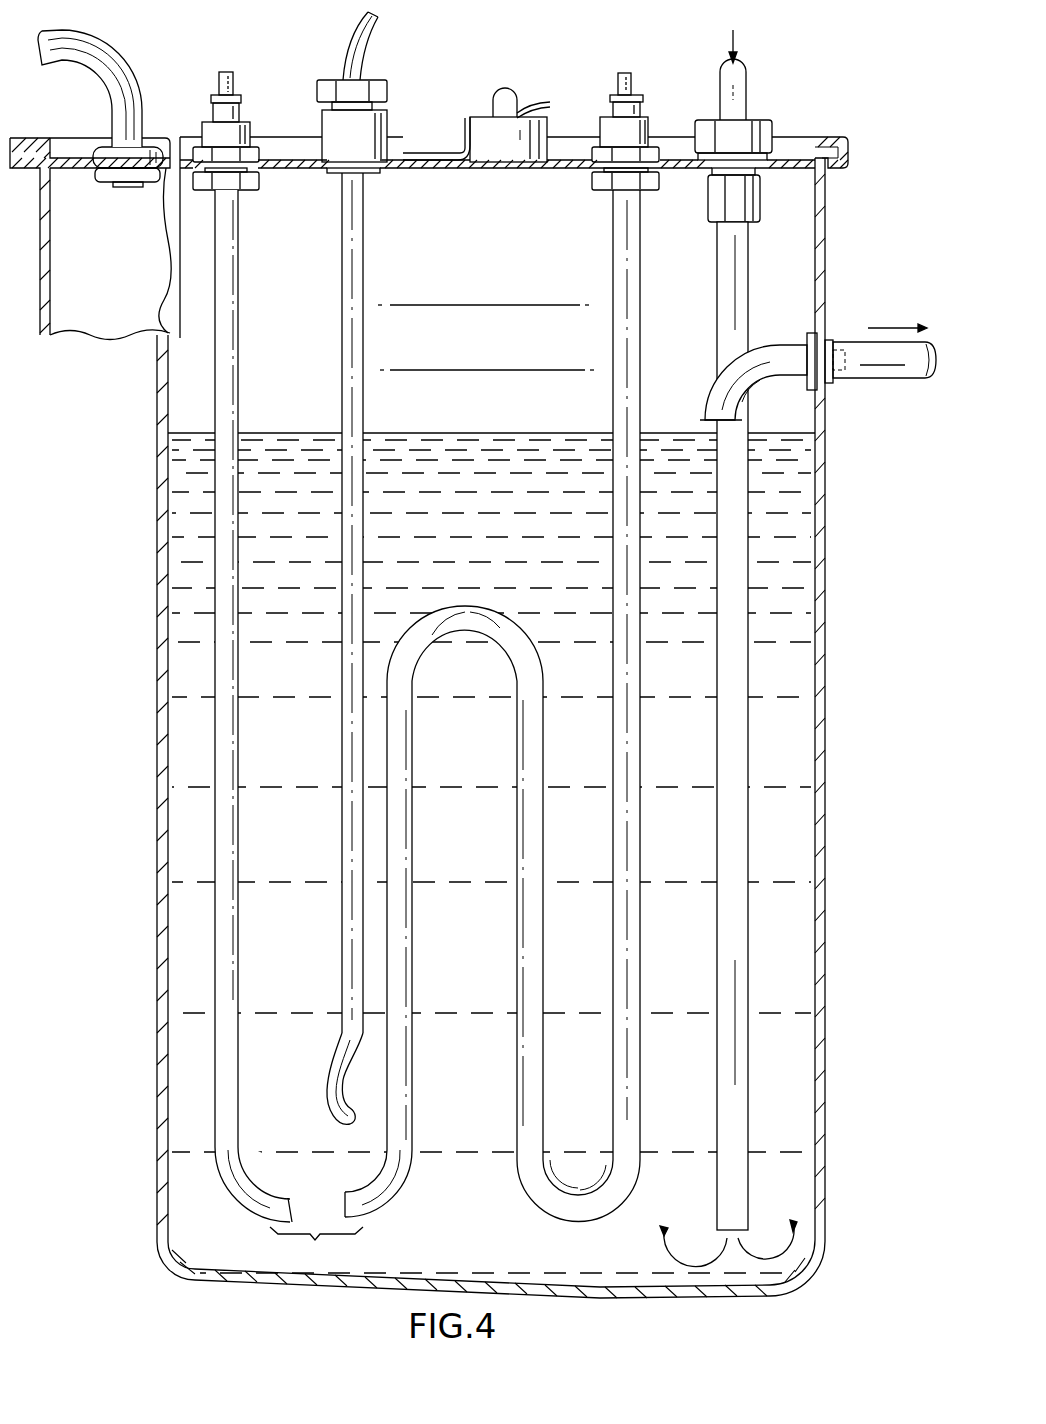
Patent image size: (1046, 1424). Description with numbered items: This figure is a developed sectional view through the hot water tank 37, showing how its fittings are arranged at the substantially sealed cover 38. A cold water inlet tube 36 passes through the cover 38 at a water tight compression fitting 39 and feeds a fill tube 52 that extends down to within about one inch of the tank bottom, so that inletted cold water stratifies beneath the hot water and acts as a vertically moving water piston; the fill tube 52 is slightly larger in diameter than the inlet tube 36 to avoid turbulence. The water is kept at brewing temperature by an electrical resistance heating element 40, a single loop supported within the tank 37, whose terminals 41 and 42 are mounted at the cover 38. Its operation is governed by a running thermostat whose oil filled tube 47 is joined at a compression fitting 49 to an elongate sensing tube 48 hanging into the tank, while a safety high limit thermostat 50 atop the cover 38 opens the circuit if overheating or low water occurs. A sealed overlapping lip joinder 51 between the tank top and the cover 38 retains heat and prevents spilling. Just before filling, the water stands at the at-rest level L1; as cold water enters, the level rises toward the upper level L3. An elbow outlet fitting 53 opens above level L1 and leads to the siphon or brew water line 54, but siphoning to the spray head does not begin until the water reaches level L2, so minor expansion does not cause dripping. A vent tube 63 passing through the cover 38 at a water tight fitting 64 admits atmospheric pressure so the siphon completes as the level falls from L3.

The cold water inlet tube 36 is at (725, 78).
The hot water tank 37 is at (822, 806).
The cover 38 is at (274, 160).
The compression fitting 39 is at (712, 125).
The heating element 40 is at (617, 627).
The terminal 41 is at (226, 72).
The terminal 42 is at (602, 117).
The oil filled tube 47 is at (372, 33).
The sensing tube 48 is at (343, 338).
The compression fitting 49 is at (368, 122).
The safety high limit thermostat 50 is at (518, 125).
The sealed overlapping lip joinder 51 is at (848, 152).
The fill tube 52 is at (745, 1036).
The elbow outlet fitting 53 is at (747, 362).
The siphon or brew water line 54 is at (862, 345).
The vent tube 63 is at (130, 66).
The water tight fitting 64 is at (105, 147).
The at-rest water level L1 is at (500, 433).
The siphon level L2 is at (498, 370).
The upper water level L3 is at (474, 305).